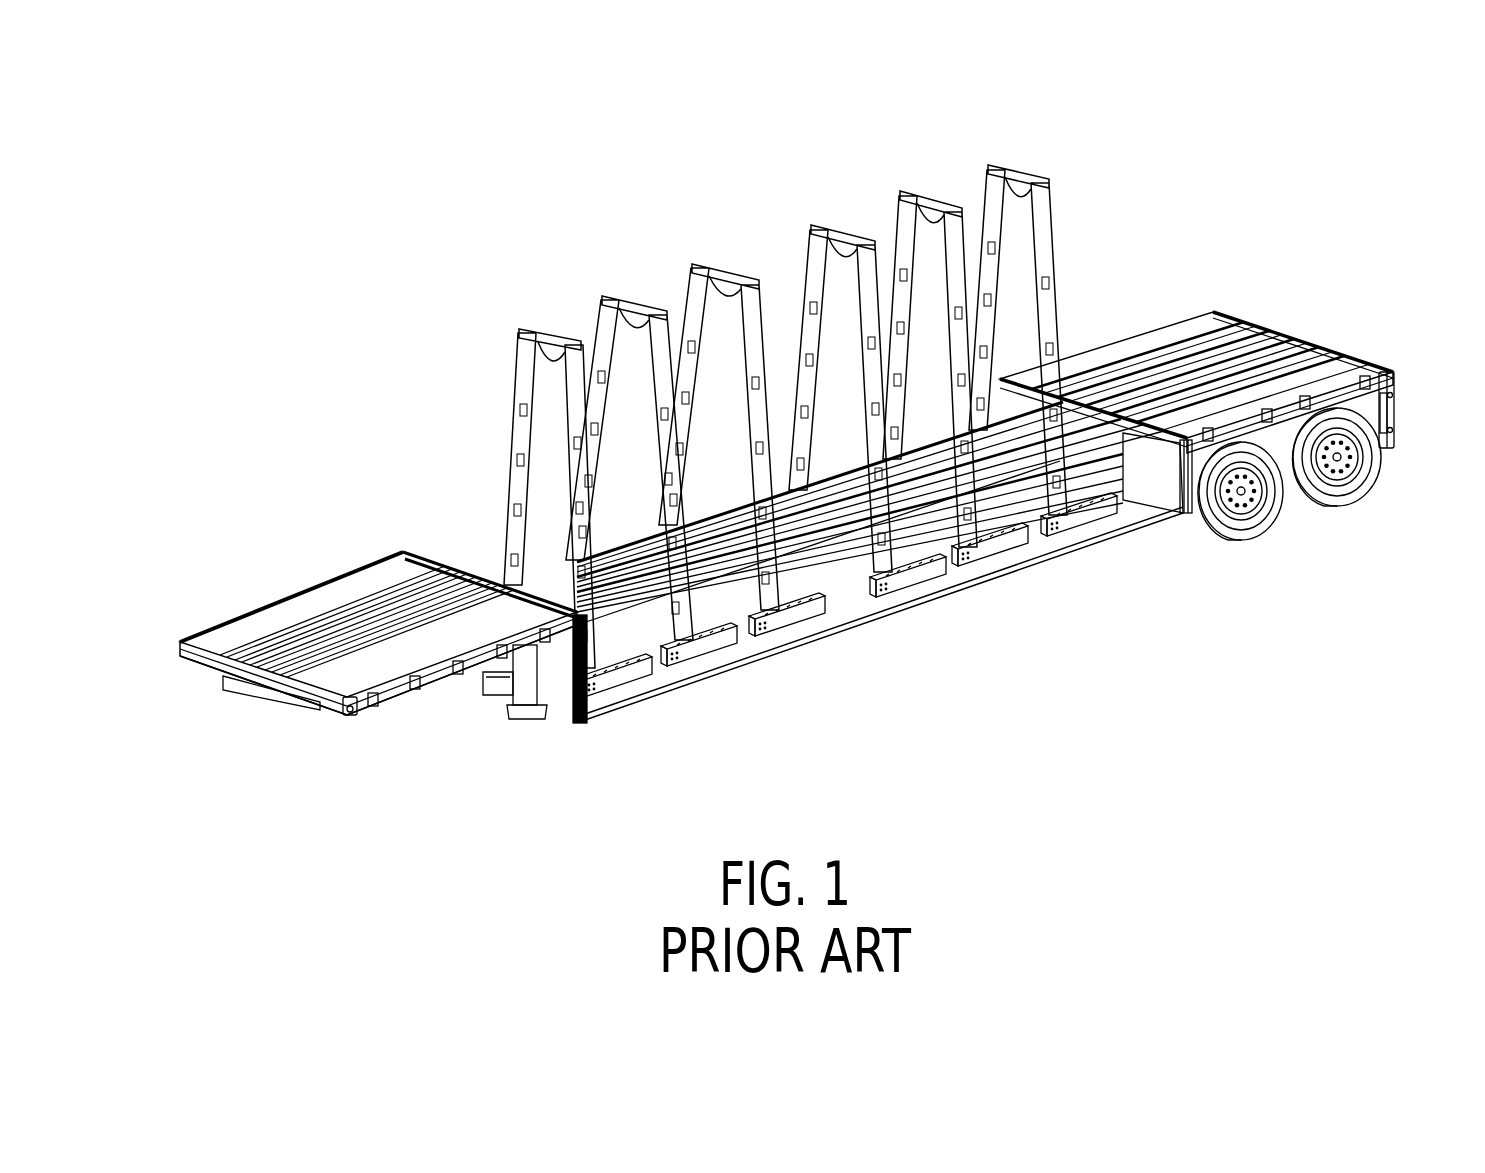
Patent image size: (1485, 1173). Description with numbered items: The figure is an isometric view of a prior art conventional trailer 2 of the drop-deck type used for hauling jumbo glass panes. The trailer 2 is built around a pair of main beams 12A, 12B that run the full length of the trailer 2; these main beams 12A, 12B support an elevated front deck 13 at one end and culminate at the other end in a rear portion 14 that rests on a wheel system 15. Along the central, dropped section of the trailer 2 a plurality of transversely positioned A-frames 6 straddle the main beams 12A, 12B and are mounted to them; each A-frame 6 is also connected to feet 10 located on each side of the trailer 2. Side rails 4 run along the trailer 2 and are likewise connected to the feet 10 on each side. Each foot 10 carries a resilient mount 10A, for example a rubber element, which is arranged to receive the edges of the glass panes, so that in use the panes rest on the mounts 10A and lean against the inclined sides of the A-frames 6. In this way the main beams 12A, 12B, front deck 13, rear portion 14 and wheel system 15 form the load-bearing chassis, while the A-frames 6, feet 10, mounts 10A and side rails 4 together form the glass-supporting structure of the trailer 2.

The trailer 2 is at (345, 366).
The side rails 4 is at (982, 595).
The A-frames 6 is at (728, 270).
The feet 10 is at (650, 668).
The mount 10A is at (697, 657).
The main beam 12A is at (337, 617).
The main beam 12B is at (348, 665).
The front deck 13 is at (241, 607).
The rear portion 14 is at (1148, 328).
The wheel system 15 is at (1222, 557).